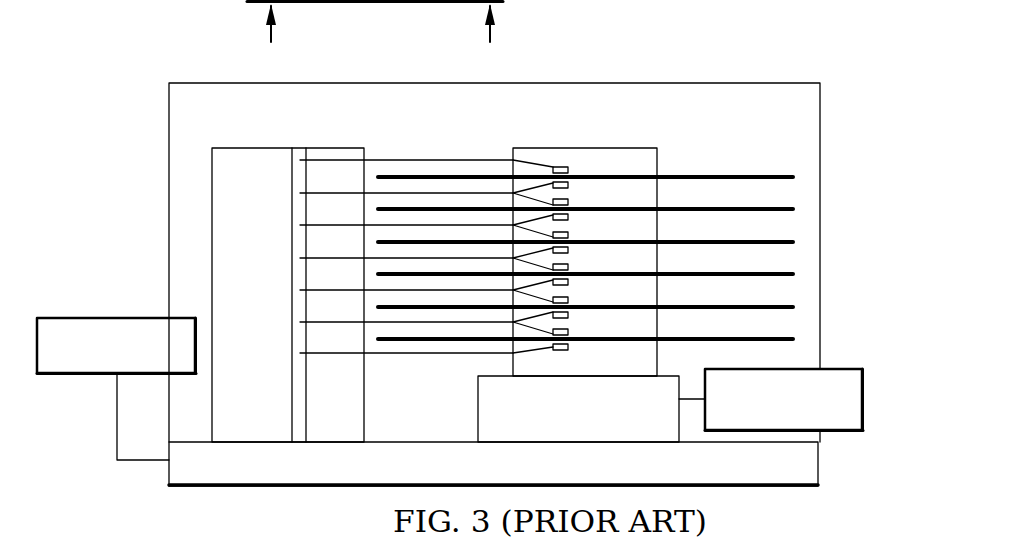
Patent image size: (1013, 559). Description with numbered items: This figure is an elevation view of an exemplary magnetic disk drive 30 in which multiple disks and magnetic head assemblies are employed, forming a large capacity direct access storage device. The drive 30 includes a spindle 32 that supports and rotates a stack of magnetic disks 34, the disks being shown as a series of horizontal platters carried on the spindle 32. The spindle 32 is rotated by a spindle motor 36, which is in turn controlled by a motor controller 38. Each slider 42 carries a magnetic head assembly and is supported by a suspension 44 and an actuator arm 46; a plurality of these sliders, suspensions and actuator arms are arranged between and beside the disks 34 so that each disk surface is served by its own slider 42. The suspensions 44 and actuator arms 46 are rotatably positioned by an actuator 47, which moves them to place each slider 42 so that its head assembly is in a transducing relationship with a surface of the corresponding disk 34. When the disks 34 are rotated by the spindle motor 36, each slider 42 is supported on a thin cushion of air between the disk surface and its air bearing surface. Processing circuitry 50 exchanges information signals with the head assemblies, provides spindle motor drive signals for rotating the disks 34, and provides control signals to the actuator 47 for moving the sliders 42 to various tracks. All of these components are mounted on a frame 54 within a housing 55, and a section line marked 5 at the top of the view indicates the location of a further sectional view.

The section line 5- 5 is at (375, 39).
The magnetic disk drive 30 is at (716, 138).
The spindle 32 is at (638, 148).
The magnetic disk 34 is at (770, 177).
The spindle motor 36 is at (598, 424).
The motor controller 38 is at (855, 433).
The slider 42 is at (565, 207).
The suspension 44 is at (537, 198).
The actuator arm 46 is at (467, 194).
The actuator 47 is at (246, 148).
The processing circuitry 50 is at (98, 318).
The frame 54 is at (288, 487).
The housing 55 is at (669, 83).